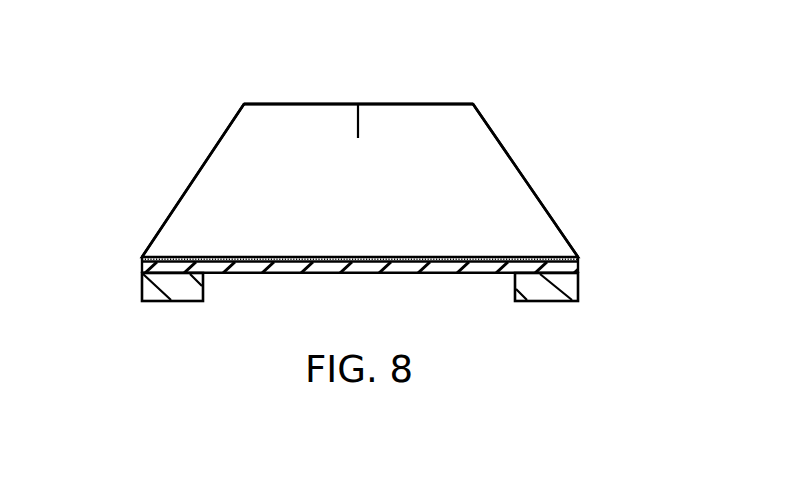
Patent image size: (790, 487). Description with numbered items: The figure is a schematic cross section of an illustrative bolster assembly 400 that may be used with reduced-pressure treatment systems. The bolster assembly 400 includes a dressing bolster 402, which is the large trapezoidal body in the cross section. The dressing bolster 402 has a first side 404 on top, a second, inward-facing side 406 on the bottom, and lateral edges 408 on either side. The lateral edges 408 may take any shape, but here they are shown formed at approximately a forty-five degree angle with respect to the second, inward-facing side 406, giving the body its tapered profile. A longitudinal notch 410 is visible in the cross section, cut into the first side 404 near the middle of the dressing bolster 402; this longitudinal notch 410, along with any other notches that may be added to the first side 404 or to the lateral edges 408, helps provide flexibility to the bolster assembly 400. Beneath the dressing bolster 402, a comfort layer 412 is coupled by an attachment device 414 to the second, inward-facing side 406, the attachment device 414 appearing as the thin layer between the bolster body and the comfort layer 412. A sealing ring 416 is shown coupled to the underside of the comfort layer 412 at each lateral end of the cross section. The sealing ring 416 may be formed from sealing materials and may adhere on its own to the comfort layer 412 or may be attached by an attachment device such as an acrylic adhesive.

The bolster assembly 400 is at (463, 78).
The dressing bolster 402 is at (380, 198).
The first side 404 is at (273, 102).
The second, inward-facing side 406 is at (178, 257).
The lateral edges 408 is at (212, 153).
The longitudinal notch 410 is at (367, 115).
The comfort layer 412 is at (400, 275).
The attachment device 414 is at (447, 260).
The sealing ring 416 is at (142, 287).